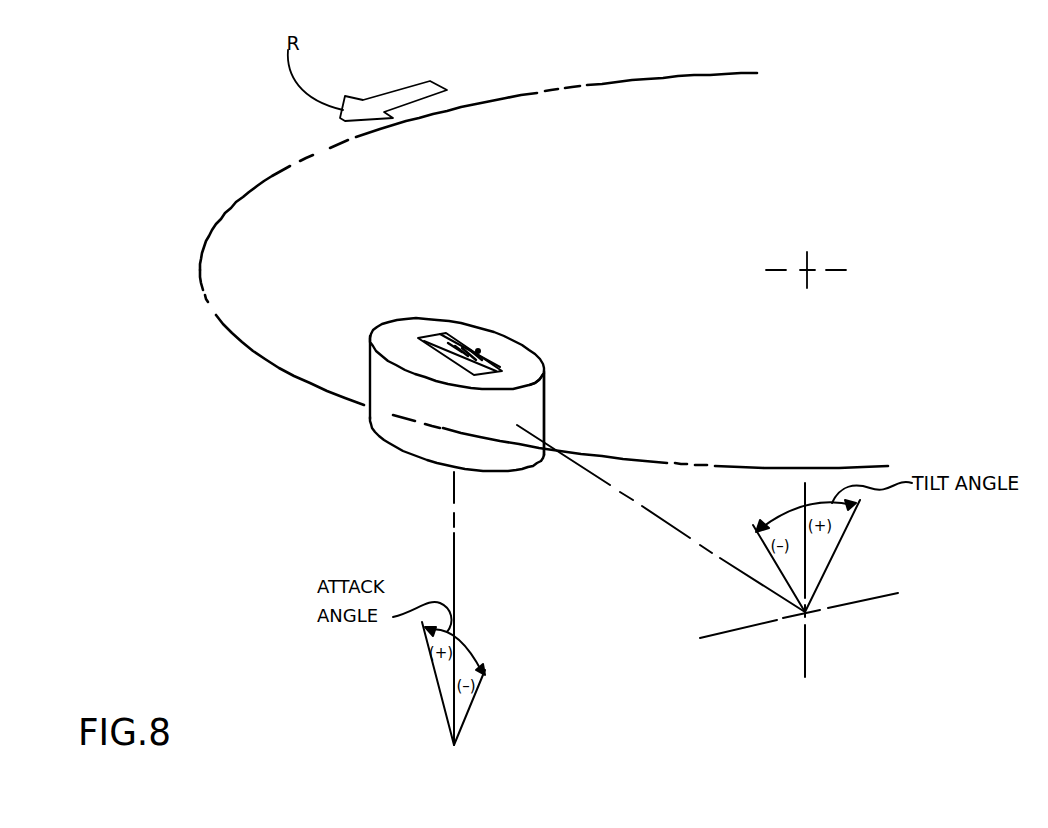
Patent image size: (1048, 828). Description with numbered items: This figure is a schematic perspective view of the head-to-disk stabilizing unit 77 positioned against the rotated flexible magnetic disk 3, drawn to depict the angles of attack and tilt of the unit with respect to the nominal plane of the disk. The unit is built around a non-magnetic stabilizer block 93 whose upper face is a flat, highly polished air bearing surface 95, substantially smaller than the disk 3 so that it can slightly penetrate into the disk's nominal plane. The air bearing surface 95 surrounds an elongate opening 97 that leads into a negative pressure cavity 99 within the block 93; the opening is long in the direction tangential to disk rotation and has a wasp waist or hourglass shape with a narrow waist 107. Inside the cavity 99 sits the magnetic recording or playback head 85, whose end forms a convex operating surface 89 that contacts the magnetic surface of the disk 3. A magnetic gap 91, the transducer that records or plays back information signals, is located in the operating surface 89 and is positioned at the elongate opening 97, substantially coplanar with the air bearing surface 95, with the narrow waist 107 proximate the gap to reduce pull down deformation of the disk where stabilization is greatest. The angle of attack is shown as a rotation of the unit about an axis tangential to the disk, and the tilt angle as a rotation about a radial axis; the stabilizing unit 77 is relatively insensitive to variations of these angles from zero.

The flexible magnetic disk 3 is at (288, 164).
The head-to-disk stabilizing unit 77 is at (557, 404).
The non-magnetic stabilizer block 93 is at (547, 379).
The air bearing surface 95 is at (521, 352).
The narrow waist 107 is at (418, 337).
The negative pressure cavity 99 is at (455, 347).
The elongate opening 97 is at (462, 352).
The magnetic gap 91 is at (470, 353).
The operating surface 89 is at (475, 355).
The magnetic recording or playback head 85 is at (478, 350).